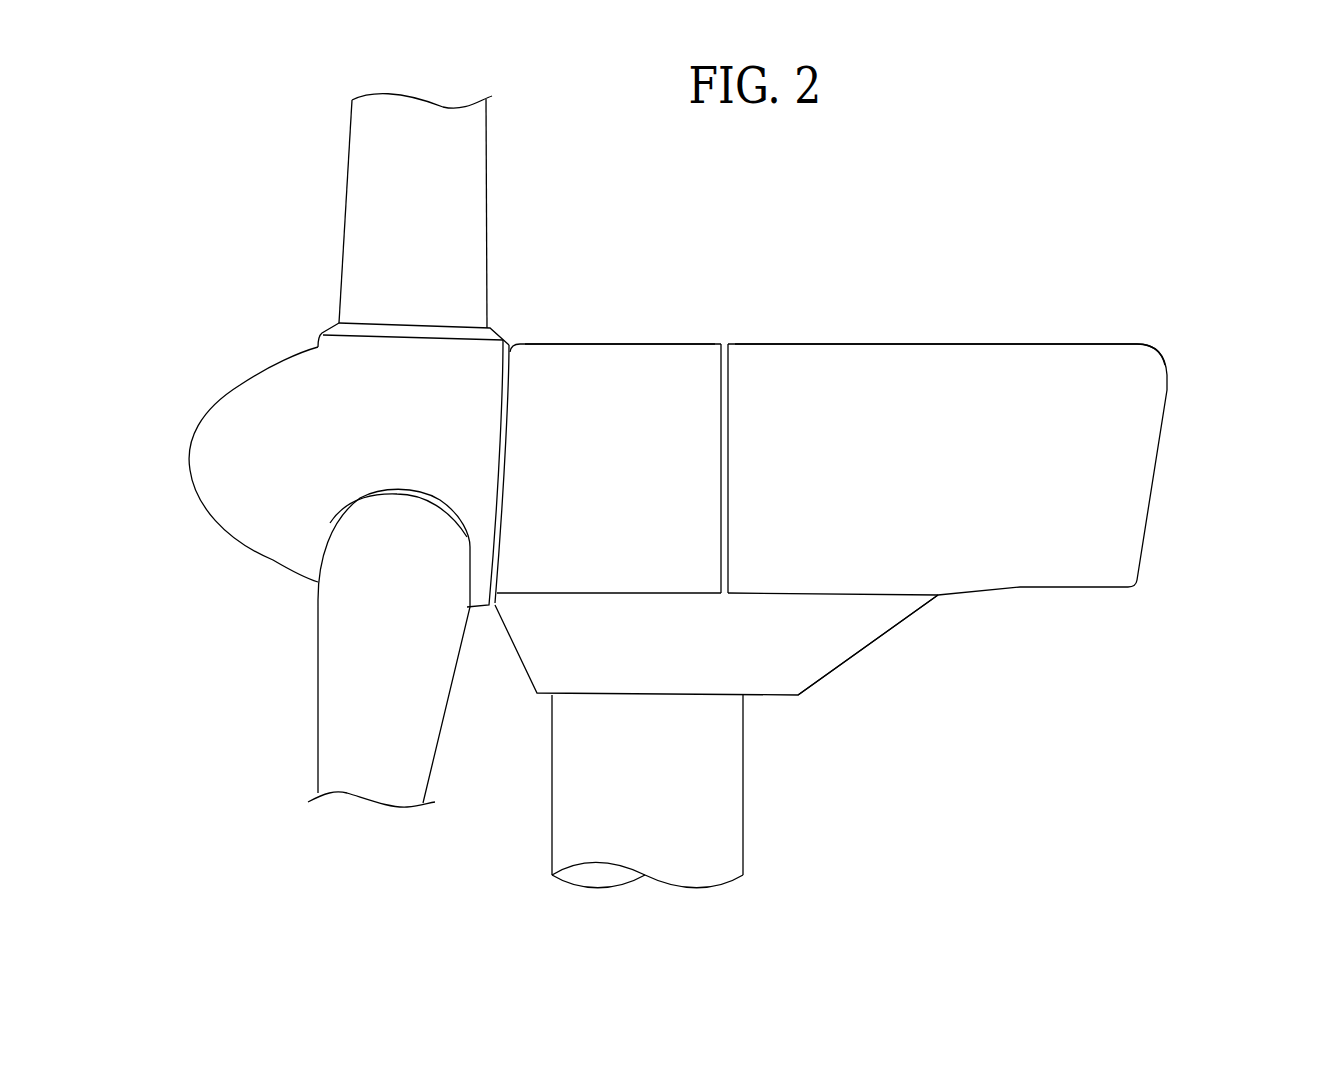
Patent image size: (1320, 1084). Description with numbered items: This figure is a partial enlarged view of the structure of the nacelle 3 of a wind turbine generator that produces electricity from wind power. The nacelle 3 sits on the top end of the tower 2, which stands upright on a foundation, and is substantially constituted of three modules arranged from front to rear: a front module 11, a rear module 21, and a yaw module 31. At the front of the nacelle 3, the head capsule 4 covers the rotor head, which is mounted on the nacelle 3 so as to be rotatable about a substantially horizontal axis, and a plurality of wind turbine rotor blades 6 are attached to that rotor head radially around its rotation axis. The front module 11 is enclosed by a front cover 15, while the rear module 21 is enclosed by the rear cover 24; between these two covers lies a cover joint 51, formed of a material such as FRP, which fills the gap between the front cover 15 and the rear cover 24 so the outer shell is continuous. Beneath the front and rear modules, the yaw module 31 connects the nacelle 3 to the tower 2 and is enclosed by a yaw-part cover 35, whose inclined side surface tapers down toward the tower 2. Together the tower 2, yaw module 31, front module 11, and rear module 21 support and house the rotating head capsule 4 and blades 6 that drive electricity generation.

The tower 2 is at (735, 795).
The nacelle 3 is at (870, 397).
The head capsule 4 is at (227, 403).
The wind turbine rotor blade 6 is at (365, 195).
The front module 11 is at (609, 414).
The front cover 15 is at (660, 352).
The rear module 21 is at (947, 415).
The rear cover 24 is at (1010, 352).
The yaw module 31 is at (726, 679).
The yaw-part cover 35 is at (838, 670).
The cover joint 51 is at (726, 345).